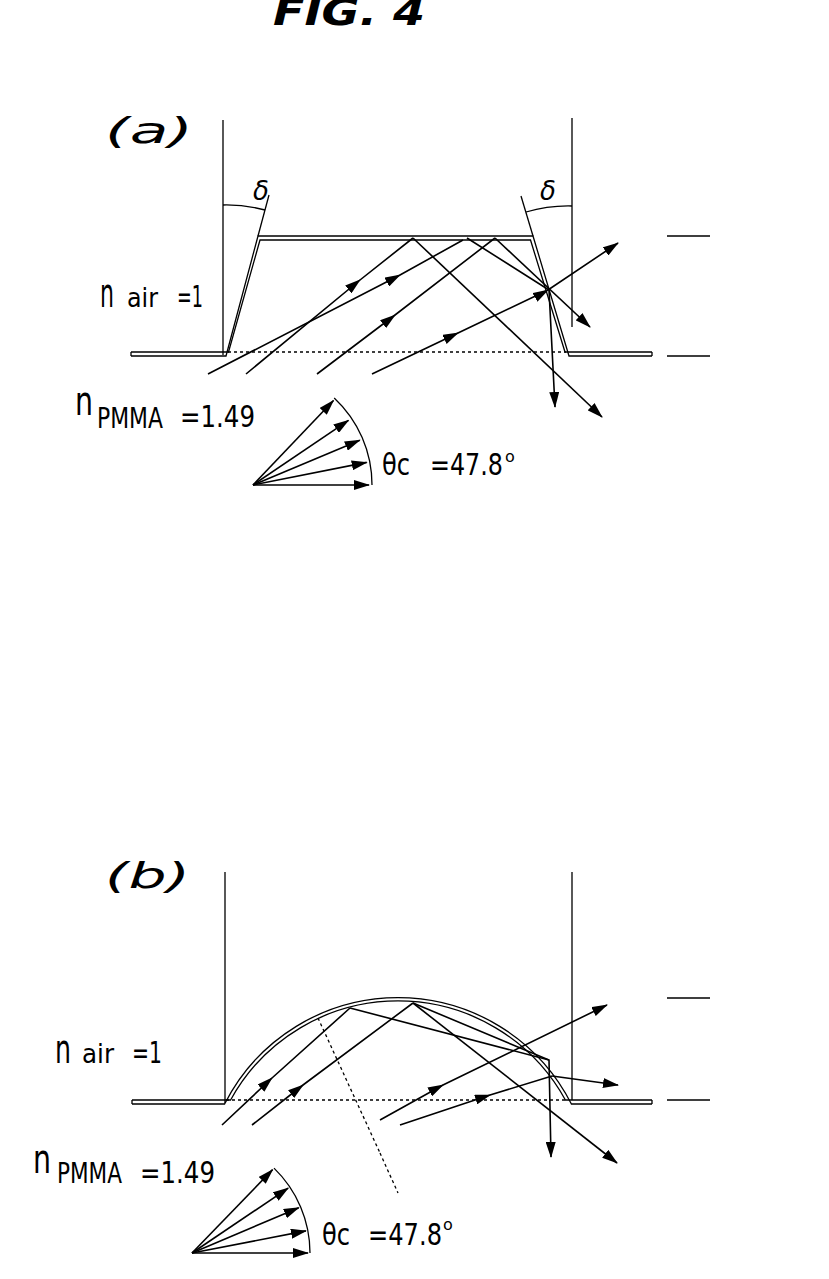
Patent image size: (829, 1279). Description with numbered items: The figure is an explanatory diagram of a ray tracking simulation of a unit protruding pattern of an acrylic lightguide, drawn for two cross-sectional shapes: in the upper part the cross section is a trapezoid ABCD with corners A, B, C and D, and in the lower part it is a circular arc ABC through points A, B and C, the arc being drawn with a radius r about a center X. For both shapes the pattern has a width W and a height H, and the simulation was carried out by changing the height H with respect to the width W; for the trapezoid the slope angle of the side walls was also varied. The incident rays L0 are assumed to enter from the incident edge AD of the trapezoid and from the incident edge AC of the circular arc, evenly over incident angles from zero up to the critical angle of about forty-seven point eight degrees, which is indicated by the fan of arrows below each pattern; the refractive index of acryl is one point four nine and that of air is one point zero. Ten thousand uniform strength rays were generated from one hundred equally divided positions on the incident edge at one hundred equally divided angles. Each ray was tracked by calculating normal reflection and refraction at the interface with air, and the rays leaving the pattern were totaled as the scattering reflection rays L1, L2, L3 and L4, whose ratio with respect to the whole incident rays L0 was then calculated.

The width W is at (572, 146).
The height H is at (687, 236).
The vertex A is at (227, 687).
The vertex B is at (339, 597).
The vertex C is at (557, 666).
The vertex D is at (584, 336).
The incident rays L0 is at (351, 690).
The scattering reflection ray L1 is at (525, 718).
The scattering reflection ray L2 is at (460, 717).
The scattering reflection ray L3 is at (526, 681).
The scattering reflection ray L4 is at (511, 673).
The radius of curvature r is at (356, 1089).
The center of curvature X is at (401, 1179).